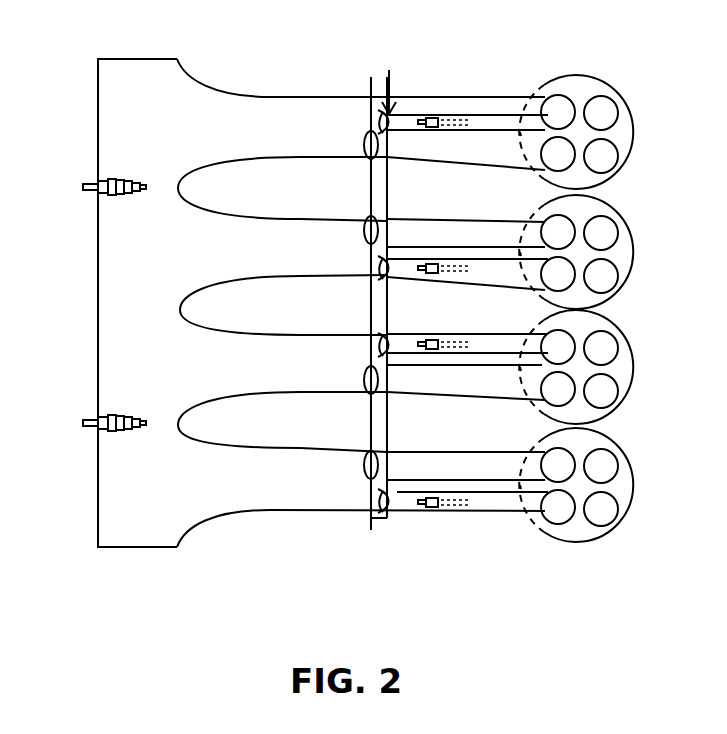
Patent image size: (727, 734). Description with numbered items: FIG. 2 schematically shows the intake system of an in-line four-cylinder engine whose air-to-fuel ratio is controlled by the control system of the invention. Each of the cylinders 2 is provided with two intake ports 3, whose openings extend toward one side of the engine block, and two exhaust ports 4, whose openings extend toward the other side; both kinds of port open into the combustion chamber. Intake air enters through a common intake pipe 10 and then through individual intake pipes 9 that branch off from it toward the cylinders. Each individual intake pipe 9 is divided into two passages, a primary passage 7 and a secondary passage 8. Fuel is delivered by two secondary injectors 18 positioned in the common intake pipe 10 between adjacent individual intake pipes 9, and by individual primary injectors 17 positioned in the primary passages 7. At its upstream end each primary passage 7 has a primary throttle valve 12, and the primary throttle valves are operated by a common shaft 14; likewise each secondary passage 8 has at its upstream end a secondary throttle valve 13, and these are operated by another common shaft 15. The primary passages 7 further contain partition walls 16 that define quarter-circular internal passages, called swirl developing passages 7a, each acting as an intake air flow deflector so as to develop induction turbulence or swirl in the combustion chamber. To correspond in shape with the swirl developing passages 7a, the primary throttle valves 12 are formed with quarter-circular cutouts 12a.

The cylinder 2 is at (624, 118).
The intake port 3 is at (556, 110).
The exhaust port 4 is at (605, 100).
The primary passage 7 is at (480, 105).
The swirl developing passage 7a is at (494, 122).
The secondary passage 8 is at (408, 138).
The individual intake pipe 9 is at (270, 106).
The common intake pipe 10 is at (112, 296).
The primary throttle valve 12 is at (396, 78).
The quarter-circular cutout 12a is at (380, 100).
The secondary throttle valve 13 is at (367, 130).
The common shaft 14 is at (388, 528).
The common shaft 15 is at (368, 519).
The partition wall 16 is at (526, 105).
The primary injector 17 is at (444, 116).
The secondary injector 18 is at (100, 184).